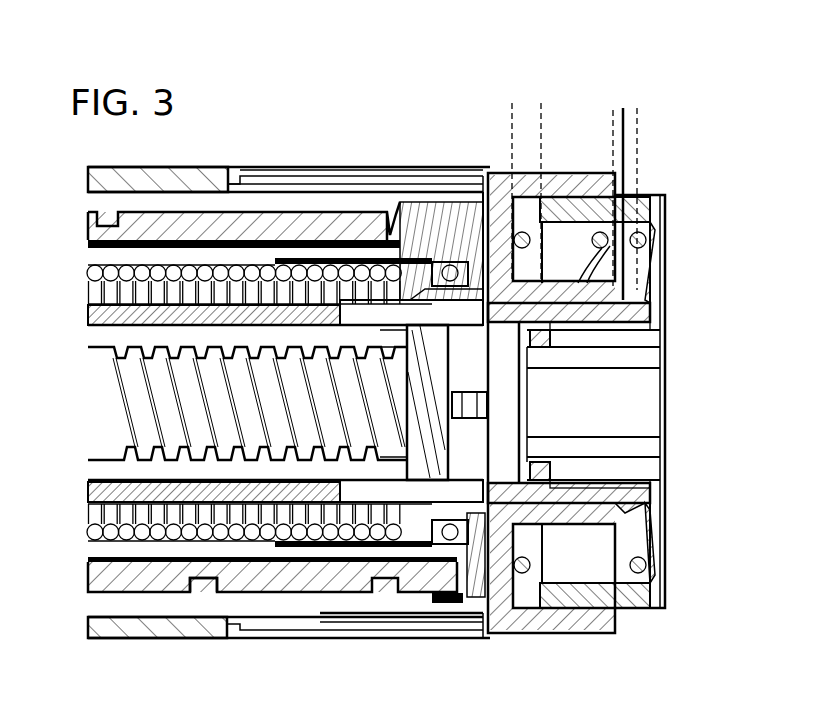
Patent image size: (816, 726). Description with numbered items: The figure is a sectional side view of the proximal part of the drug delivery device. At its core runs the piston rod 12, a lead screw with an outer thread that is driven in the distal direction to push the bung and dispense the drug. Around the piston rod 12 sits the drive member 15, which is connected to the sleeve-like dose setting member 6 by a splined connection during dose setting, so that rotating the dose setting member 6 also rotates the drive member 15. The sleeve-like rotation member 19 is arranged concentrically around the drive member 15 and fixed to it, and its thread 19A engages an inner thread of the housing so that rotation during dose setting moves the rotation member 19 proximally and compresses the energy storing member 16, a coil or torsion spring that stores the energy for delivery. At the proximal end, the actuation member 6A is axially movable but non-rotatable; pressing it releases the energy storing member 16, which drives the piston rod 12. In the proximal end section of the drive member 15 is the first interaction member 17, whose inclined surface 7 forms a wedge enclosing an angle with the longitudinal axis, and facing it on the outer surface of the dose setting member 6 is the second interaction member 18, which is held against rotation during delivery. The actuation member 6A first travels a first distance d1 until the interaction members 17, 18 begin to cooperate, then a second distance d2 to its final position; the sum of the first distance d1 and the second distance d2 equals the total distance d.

The dose setting member 6 is at (609, 434).
The actuation member 6A is at (665, 600).
The inclined surface 7 is at (623, 303).
The piston rod 12 is at (117, 393).
The drive member 15 is at (108, 487).
The energy storing member 16 is at (88, 285).
The first interaction member 17 is at (648, 497).
The second interaction member 18 is at (632, 512).
The rotation member 19 is at (152, 577).
The thread 19A is at (205, 588).
The total distance d is at (524, 110).
The first distance d1 is at (617, 108).
The second distance d2 is at (636, 108).